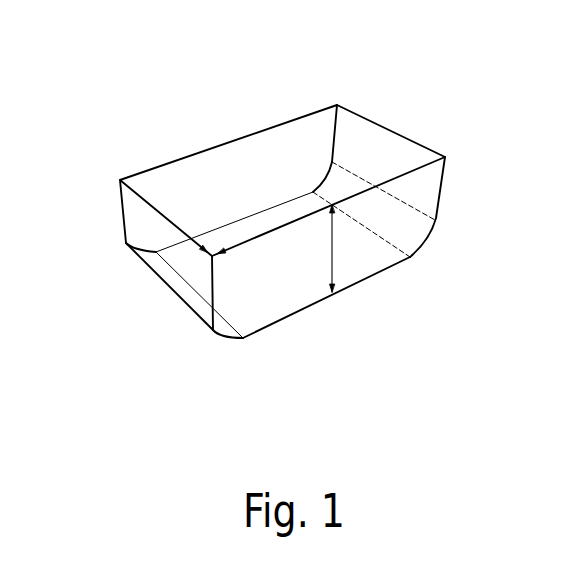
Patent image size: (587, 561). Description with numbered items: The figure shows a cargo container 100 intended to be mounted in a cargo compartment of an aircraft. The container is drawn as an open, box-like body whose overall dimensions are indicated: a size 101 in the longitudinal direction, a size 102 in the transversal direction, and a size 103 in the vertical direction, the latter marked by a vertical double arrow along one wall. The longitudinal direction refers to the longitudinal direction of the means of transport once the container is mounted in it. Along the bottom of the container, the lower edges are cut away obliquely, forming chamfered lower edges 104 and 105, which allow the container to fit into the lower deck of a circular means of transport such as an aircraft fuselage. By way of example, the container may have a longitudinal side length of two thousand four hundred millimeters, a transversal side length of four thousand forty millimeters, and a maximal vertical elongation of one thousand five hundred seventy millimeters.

The cargo container 100 is at (455, 63).
The size in a longitudinal direction 101 is at (143, 205).
The size in a transversal direction 102 is at (368, 186).
The size in a vertical direction 103 is at (337, 260).
The chamfered lower edge 104 is at (232, 348).
The chamfered lower edge 105 is at (438, 243).